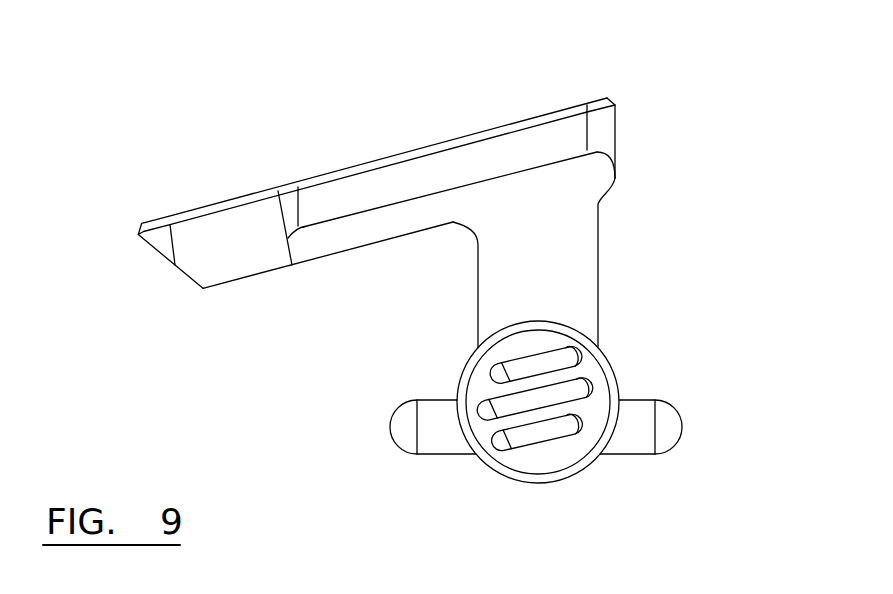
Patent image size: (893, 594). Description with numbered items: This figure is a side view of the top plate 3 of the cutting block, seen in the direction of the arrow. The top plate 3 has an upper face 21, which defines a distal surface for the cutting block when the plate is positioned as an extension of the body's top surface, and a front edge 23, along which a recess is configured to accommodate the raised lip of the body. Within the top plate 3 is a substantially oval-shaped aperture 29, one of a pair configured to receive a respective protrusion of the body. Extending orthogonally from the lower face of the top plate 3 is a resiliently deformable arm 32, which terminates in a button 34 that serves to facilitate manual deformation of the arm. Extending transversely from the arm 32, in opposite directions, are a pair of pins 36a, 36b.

The top plate 3 is at (336, 140).
The upper face 21 is at (212, 205).
The front edge 23 is at (160, 254).
The second oval-shaped aperture 29 is at (455, 165).
The second resiliently deformable arm 32 is at (565, 263).
The button 34 is at (590, 380).
The pin 36a is at (402, 428).
The pin 36b is at (670, 427).